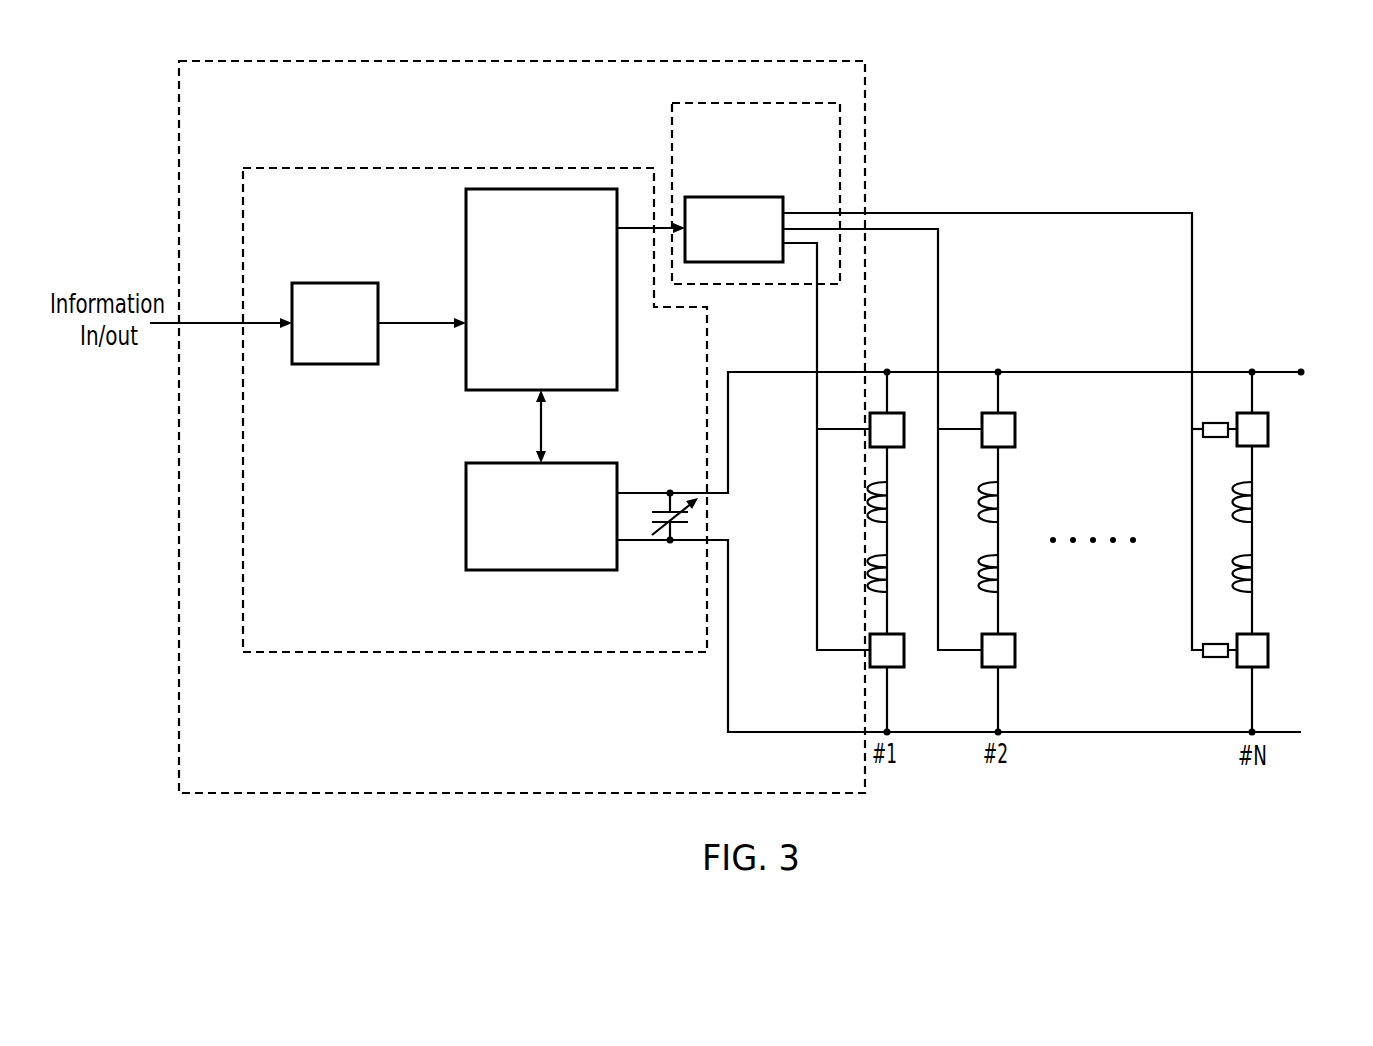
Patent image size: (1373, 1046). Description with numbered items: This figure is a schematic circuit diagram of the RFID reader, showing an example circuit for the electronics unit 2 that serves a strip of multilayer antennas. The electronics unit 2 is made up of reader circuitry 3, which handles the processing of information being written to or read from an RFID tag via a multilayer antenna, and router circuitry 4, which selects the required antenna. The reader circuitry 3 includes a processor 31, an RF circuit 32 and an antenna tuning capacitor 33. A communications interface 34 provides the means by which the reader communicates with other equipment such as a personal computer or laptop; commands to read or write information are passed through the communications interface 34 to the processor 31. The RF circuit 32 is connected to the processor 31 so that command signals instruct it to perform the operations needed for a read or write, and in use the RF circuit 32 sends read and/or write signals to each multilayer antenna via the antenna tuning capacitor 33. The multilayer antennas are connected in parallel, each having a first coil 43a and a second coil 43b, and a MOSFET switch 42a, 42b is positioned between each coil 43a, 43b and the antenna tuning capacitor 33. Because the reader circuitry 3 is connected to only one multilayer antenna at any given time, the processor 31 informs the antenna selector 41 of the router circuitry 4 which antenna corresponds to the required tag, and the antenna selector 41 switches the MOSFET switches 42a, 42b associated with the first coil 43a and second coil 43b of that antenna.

The electronics unit 2 is at (213, 771).
The reader circuitry 3 is at (285, 636).
The router circuitry 4 is at (829, 144).
The processor 31 is at (558, 324).
The RF circuit 32 is at (506, 578).
The antenna tuning capacitor 33 is at (667, 566).
The communications interface 34 is at (324, 274).
The antenna selector 41 is at (750, 244).
The MOSFET switch 42a is at (1282, 426).
The MOSFET switch 42b is at (1282, 658).
The first coil 43a is at (1282, 499).
The second coil 43b is at (1280, 579).